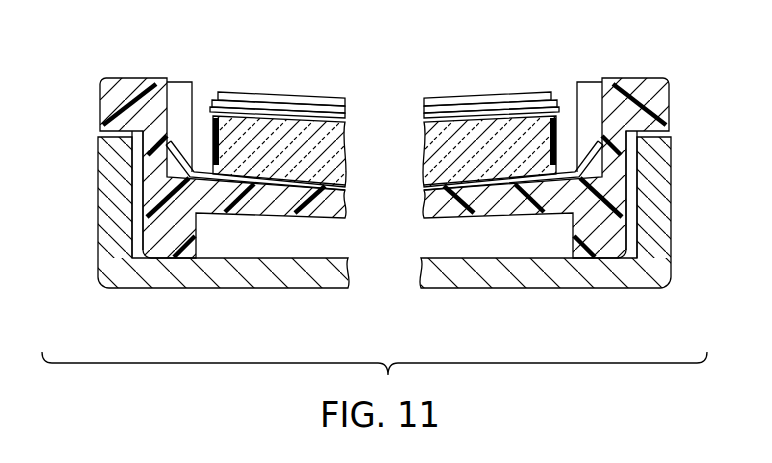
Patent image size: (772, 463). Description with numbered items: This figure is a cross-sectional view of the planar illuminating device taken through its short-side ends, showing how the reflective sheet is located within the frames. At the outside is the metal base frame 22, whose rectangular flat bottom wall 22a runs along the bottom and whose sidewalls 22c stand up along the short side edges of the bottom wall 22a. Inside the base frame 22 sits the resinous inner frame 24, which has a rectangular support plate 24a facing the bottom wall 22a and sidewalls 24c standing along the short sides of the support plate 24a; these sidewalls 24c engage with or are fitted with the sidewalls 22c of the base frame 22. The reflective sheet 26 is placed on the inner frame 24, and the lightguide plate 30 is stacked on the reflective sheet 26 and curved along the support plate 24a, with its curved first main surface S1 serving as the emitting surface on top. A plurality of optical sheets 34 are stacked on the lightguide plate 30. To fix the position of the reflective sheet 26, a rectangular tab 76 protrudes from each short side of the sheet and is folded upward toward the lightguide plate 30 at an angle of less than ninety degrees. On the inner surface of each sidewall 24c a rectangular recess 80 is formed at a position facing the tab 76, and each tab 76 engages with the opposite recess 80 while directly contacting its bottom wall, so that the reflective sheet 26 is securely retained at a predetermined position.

The base frame 22 is at (385, 247).
The bottom wall 22a is at (267, 286).
The sidewalls 22c is at (102, 238).
The inner frame 24 is at (385, 205).
The support plate 24a is at (493, 207).
The sidewalls 24c is at (155, 157).
The reflective sheet 26 is at (291, 186).
The lightguide plate 30 is at (495, 137).
The optical sheets 34 is at (443, 94).
The tab 76 is at (193, 140).
The recess 80 is at (173, 102).
The first main surface S1 is at (312, 122).